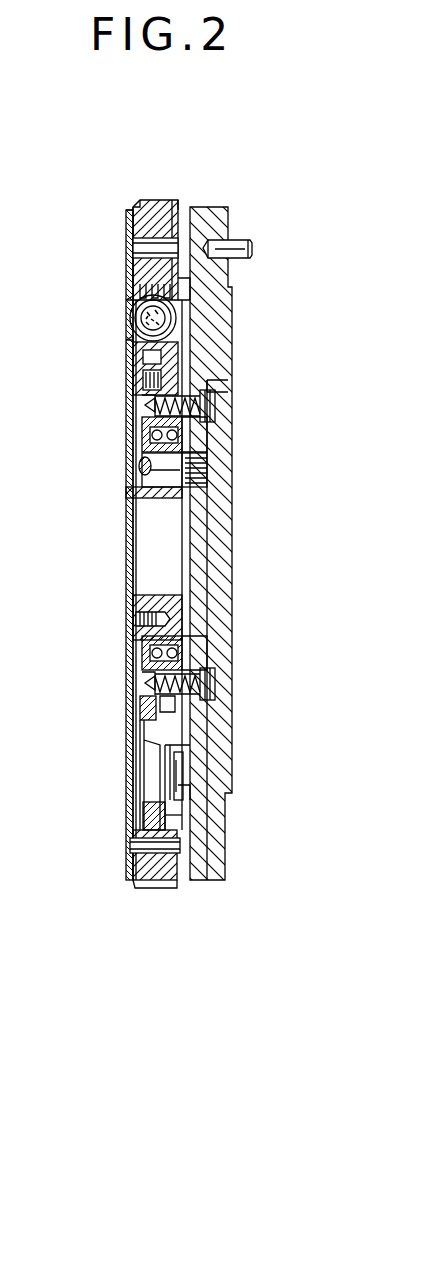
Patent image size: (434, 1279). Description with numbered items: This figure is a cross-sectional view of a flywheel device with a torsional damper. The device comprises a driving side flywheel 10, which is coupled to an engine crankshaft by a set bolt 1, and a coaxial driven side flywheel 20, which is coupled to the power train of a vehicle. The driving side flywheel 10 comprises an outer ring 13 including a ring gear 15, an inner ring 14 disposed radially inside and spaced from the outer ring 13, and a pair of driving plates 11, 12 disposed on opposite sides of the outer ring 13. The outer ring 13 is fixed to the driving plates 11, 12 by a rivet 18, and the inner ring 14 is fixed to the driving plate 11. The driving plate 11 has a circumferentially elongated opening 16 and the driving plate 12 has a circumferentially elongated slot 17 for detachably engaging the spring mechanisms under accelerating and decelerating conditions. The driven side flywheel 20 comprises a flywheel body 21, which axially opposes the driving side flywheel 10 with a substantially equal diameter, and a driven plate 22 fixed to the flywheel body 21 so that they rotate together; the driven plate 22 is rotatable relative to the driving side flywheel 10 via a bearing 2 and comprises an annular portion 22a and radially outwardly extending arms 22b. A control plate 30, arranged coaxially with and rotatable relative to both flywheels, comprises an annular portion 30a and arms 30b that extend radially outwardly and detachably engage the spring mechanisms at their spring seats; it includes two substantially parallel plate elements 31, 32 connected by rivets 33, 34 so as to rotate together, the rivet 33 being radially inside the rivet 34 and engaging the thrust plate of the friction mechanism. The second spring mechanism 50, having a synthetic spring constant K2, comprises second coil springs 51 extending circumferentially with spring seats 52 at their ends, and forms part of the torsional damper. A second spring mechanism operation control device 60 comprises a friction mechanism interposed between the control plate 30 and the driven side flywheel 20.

The set bolt 1 is at (200, 476).
The bearing 2 is at (200, 440).
The driving side flywheel 10 is at (137, 196).
The driving plate 11 is at (133, 212).
The driving plate 12 is at (178, 205).
The outer ring 13 is at (128, 218).
The inner ring 14 is at (133, 500).
The ring gear 15 is at (185, 520).
The opening 16 is at (138, 285).
The slot 17 is at (186, 290).
The rivet 18 is at (142, 243).
The driven side flywheel 20 is at (201, 206).
The flywheel body 21 is at (217, 378).
The driven plate 22 is at (190, 433).
The annular portion 22a is at (148, 402).
The arm 22b is at (252, 251).
The control plate 30 is at (130, 282).
The annular portion 30a is at (145, 712).
The arm 30b is at (150, 806).
The plate element 31 is at (142, 743).
The plate element 32 is at (192, 746).
The rivet 33 is at (222, 373).
The rivet 34 is at (150, 786).
The second spring mechanism 50 is at (171, 336).
The second coil spring 51 is at (177, 312).
The spring seat 52 is at (170, 334).
The second spring mechanism operation control device 60 is at (138, 380).